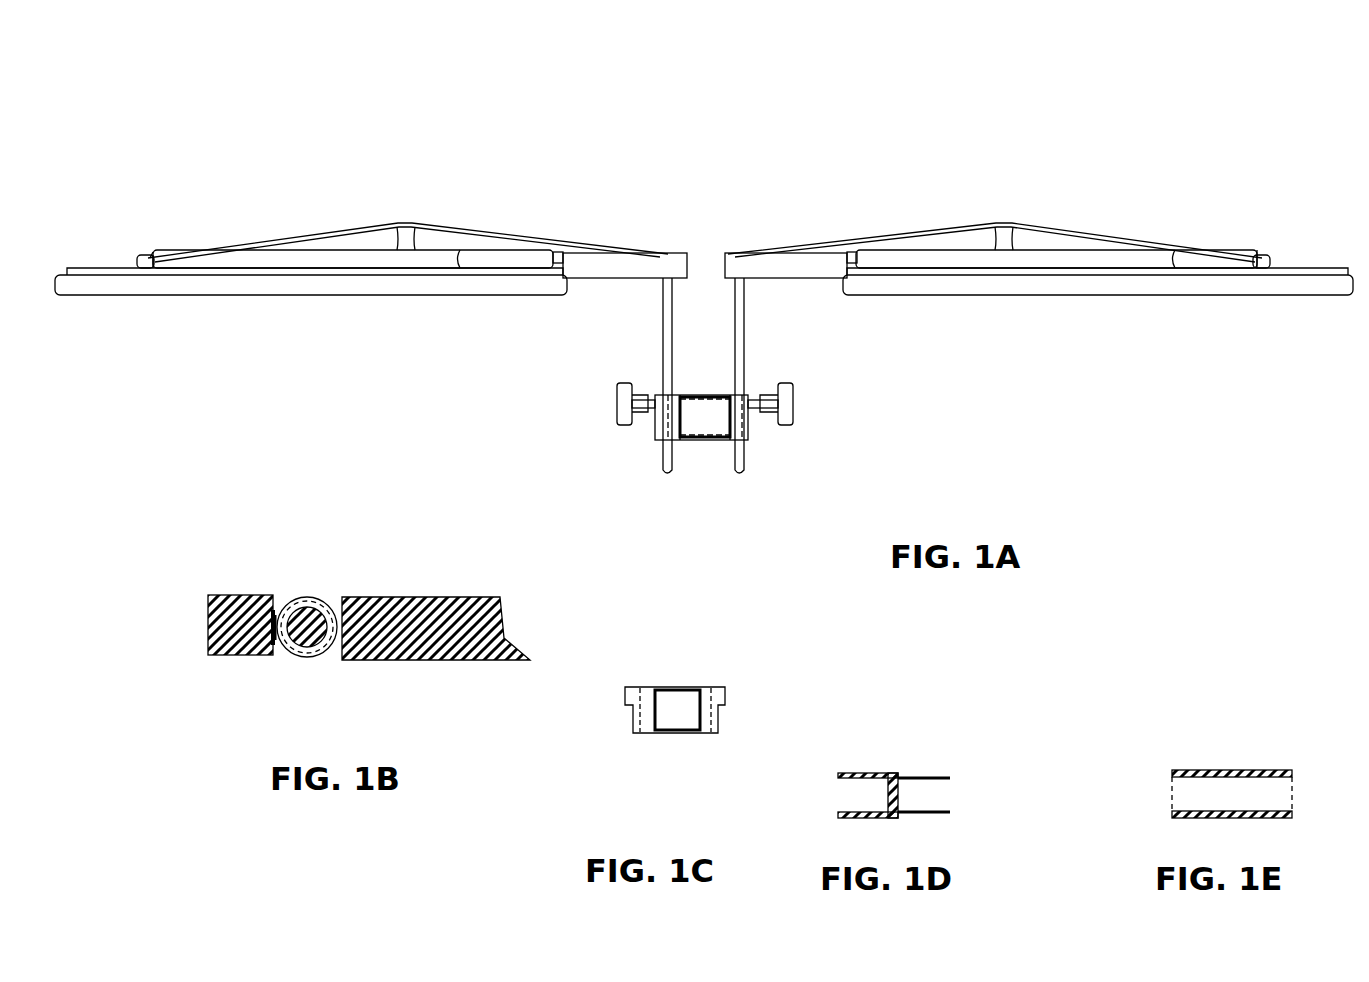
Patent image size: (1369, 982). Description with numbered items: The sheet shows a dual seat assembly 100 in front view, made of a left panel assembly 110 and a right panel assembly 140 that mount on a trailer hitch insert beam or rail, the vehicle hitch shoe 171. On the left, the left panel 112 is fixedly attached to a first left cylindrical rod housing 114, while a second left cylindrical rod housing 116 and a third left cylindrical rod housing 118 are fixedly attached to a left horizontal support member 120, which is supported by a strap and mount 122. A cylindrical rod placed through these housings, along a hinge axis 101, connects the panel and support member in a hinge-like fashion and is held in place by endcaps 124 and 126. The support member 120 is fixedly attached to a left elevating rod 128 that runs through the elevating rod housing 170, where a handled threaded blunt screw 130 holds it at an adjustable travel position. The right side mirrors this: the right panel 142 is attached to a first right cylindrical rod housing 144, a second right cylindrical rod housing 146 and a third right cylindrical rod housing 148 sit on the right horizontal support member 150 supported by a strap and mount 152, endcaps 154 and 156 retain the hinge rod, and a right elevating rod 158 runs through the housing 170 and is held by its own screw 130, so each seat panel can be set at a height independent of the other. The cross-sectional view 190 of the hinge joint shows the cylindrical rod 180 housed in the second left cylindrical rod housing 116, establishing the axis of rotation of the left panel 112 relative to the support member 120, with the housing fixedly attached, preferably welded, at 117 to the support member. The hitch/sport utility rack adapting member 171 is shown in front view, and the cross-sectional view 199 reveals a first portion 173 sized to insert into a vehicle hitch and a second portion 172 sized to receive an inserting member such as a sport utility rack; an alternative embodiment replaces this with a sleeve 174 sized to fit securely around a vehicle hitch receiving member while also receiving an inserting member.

In FIG. 1A, the dual seat assembly 100 is at (645, 95).
In FIG. 1A, the hinge axis 101 is at (198, 250).
In FIG. 1A, the left panel assembly 110 is at (264, 340).
In FIG. 1A, the left panel 112 is at (334, 296).
In FIG. 1B, the left panel 112 is at (430, 598).
In FIG. 1A, the first left cylindrical rod housing 114 is at (350, 262).
In FIG. 1A, the second left cylindrical rod housing 116 is at (222, 262).
In FIG. 1B, the second left cylindrical rod housing 116 is at (310, 598).
In FIG. 1B, the fixed attachment 117 is at (280, 650).
In FIG. 1A, the third left cylindrical rod housing 118 is at (497, 258).
In FIG. 1A, the left horizontal support member 120 is at (628, 262).
In FIG. 1B, the left horizontal support member 120 is at (240, 598).
In FIG. 1A, the strap and mount 122 is at (405, 228).
In FIG. 1A, the endcap 124 is at (140, 257).
In FIG. 1A, the endcap 126 is at (558, 257).
In FIG. 1A, the left elevating rod 128 is at (662, 330).
In FIG. 1A, the handled threaded blunt screw 130 is at (616, 400).
In FIG. 1A, the right panel assembly 140 is at (1060, 352).
In FIG. 1A, the right panel 142 is at (1150, 283).
In FIG. 1A, the first right cylindrical rod housing 144 is at (1035, 258).
In FIG. 1A, the second right cylindrical rod housing 146 is at (1200, 260).
In FIG. 1A, the third right cylindrical rod housing 148 is at (905, 255).
In FIG. 1A, the right horizontal support member 150 is at (780, 262).
In FIG. 1A, the strap and mount 152 is at (1003, 228).
In FIG. 1A, the endcap 154 is at (840, 260).
In FIG. 1A, the endcap 156 is at (1272, 262).
In FIG. 1A, the right elevating rod 158 is at (746, 330).
In FIG. 1A, the elevating rod housing 170 is at (658, 440).
In FIG. 1A, the vehicle hitch shoe 171 is at (718, 445).
In FIG. 1C, the vehicle hitch shoe 171 is at (708, 688).
In FIG. 1D, the vehicle hitch shoe 171 is at (900, 738).
In FIG. 1E, the vehicle hitch shoe 171 is at (1235, 738).
In FIG. 1D, the second portion 172 is at (852, 772).
In FIG. 1D, the first portion 173 is at (928, 775).
In FIG. 1E, the sleeve 174 is at (1187, 770).
In FIG. 1B, the cylindrical rod 180 is at (322, 652).
In FIG. 1A, the cross-sectional view 190 is at (163, 345).
In FIG. 1C, the cross-sectional view 199 is at (678, 678).